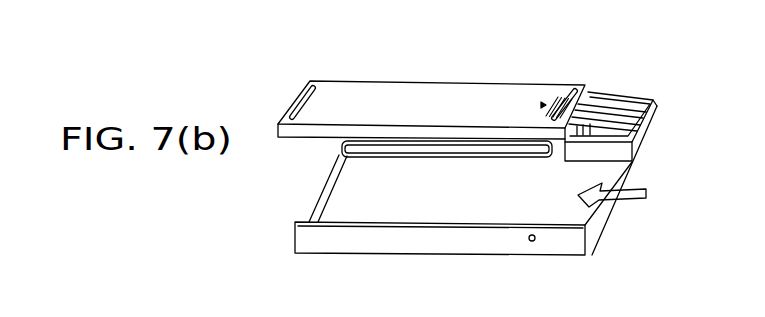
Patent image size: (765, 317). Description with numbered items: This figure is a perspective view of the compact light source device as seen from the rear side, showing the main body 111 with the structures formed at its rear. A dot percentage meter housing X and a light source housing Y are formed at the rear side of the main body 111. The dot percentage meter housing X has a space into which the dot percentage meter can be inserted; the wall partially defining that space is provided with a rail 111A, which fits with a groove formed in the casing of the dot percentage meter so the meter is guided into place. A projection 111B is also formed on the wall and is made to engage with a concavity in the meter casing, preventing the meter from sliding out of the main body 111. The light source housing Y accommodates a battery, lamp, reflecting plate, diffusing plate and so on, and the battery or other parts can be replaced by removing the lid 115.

The main body 111 is at (403, 257).
The rail 111A is at (342, 150).
The projection 111B is at (532, 243).
The lid 115 is at (398, 92).
The dot percentage meter housing X is at (590, 218).
The light source housing Y is at (606, 130).